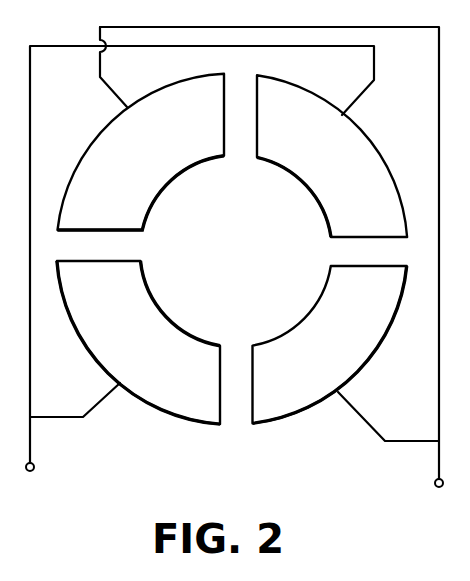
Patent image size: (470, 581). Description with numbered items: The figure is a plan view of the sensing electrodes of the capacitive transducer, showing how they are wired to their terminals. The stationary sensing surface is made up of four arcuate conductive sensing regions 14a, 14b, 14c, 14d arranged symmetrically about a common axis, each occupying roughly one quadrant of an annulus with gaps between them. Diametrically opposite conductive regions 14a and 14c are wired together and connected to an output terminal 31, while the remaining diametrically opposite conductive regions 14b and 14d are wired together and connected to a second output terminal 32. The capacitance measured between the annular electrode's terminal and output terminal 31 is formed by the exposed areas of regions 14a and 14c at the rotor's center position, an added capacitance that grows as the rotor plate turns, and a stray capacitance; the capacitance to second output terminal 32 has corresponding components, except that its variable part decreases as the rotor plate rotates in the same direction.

The conductive sensing region 14a is at (350, 162).
The conductive sensing region 14b is at (352, 362).
The conductive sensing region 14c is at (162, 357).
The conductive sensing region 14d is at (168, 157).
The output terminal 31 is at (36, 467).
The second output terminal 32 is at (433, 484).